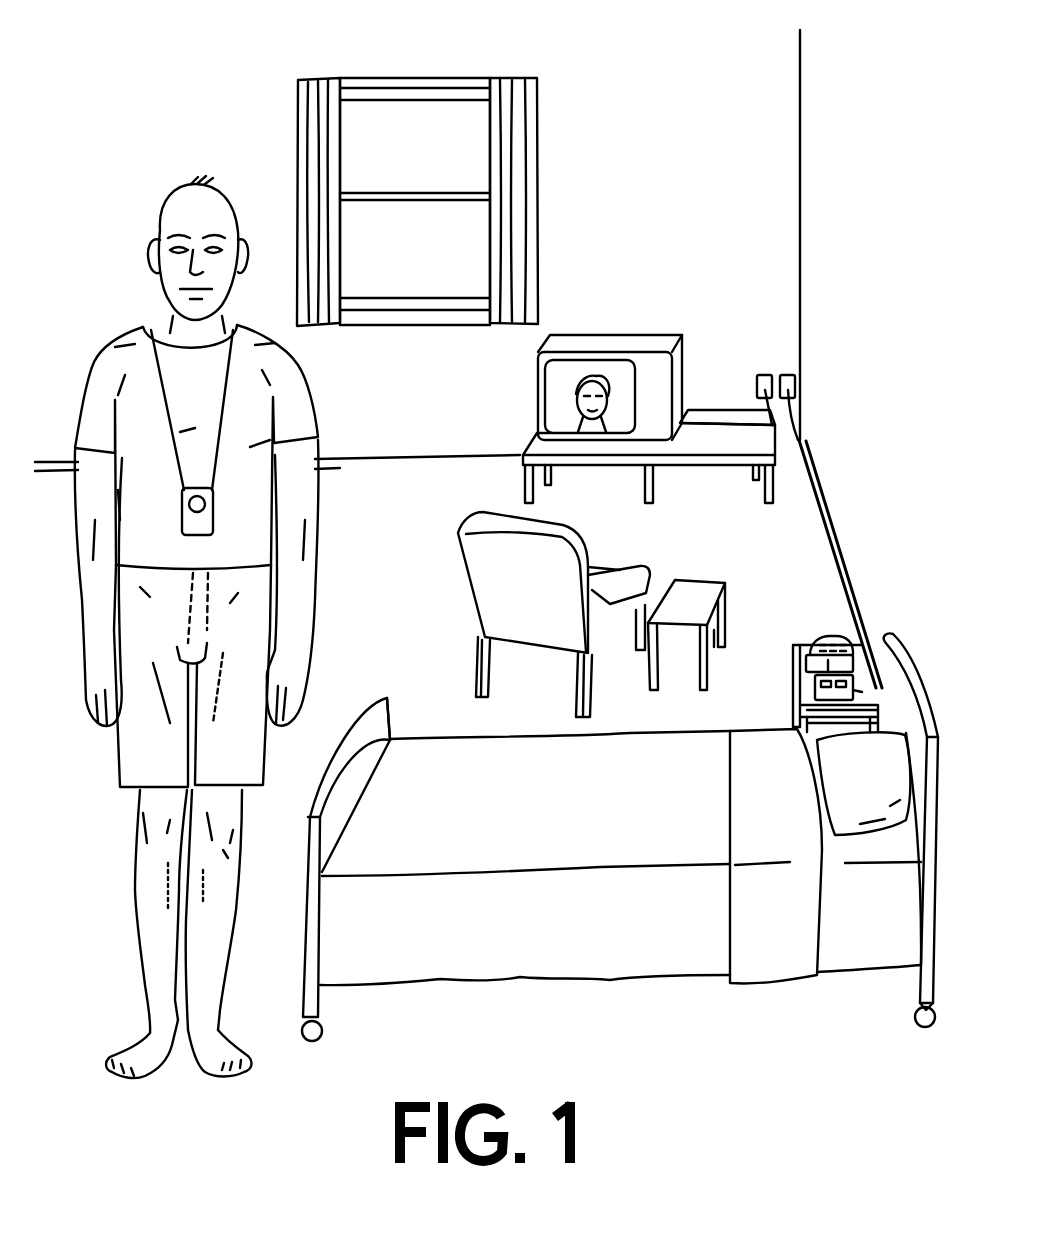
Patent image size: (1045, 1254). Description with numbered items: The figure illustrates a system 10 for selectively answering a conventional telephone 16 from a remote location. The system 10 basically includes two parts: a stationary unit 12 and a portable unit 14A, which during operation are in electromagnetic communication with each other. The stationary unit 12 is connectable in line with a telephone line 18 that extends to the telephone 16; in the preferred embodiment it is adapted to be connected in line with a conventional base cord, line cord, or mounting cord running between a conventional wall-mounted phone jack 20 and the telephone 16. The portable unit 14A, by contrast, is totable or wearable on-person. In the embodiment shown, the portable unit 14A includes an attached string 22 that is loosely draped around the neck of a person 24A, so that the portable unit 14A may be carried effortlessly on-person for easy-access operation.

The system 10 is at (103, 125).
The person 24A is at (94, 274).
The string 22 is at (233, 388).
The portable unit 14A is at (219, 508).
The wall-mounted phone jack 20 is at (790, 364).
The telephone line 18 is at (840, 518).
The telephone 16 is at (818, 620).
The stationary unit 12 is at (812, 691).